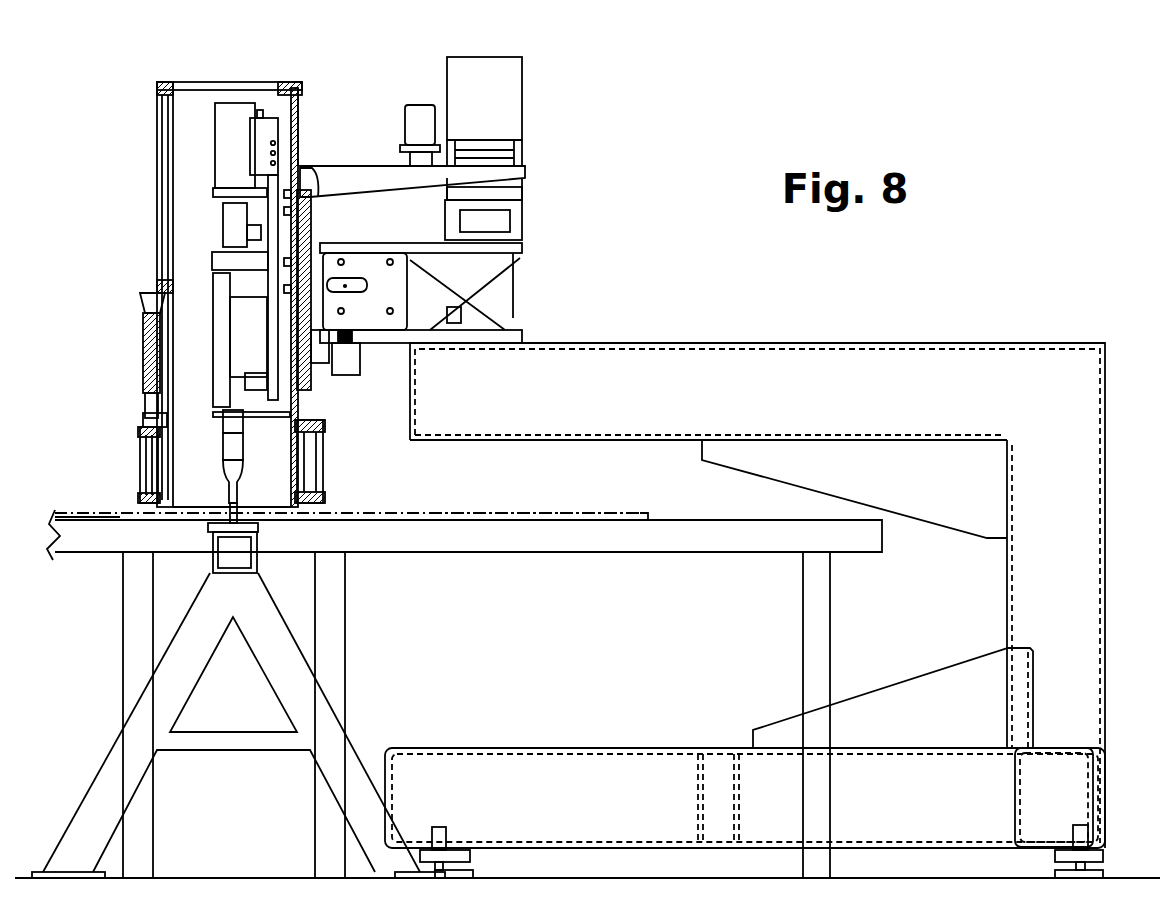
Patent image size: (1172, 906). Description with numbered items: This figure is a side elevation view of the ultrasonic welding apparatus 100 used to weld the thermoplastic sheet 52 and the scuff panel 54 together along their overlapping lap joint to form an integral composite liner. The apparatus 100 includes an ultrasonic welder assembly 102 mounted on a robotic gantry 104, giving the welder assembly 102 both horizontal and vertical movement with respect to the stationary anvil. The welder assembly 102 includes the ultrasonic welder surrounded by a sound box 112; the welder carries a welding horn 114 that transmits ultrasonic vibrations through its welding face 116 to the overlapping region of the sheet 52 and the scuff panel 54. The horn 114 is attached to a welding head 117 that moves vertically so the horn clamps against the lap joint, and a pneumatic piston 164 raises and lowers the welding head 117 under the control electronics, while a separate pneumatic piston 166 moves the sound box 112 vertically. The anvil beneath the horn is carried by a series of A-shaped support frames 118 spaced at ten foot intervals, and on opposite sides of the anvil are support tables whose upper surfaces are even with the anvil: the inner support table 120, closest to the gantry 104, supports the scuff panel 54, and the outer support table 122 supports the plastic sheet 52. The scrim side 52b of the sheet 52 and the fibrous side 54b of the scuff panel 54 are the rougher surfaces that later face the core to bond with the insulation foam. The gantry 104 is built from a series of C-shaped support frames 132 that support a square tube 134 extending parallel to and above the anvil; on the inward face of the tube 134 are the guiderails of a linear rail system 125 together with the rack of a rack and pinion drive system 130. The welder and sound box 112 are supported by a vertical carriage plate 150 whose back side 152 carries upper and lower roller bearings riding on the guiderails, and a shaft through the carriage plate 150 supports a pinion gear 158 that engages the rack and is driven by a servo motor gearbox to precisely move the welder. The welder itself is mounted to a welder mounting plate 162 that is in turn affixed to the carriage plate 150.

The ultrasonic welding apparatus 100 is at (552, 138).
The ultrasonic welder assembly 102 is at (259, 289).
The robotic gantry 104 is at (608, 262).
The sound box 112 is at (145, 443).
The welding horn 114 is at (242, 448).
The welding face 116 is at (233, 550).
The welding head 117 is at (215, 412).
The A-shaped support frame 118 is at (182, 683).
The inner support table 120 is at (413, 537).
The outer support table 122 is at (72, 533).
The linear rail system 125 is at (378, 330).
The rack and pinion drive system 130 is at (355, 230).
The C-shaped support frame 132 is at (745, 403).
The square tube 134 is at (350, 297).
The vertical carriage plate 150 is at (318, 195).
The back side of carriage plate 152 is at (312, 390).
The pinion gear 158 is at (320, 260).
The welder mounting plate 162 is at (294, 127).
The pneumatic piston 164 is at (227, 158).
The pneumatic piston 166 is at (143, 343).
The thermoplastic sheet 52 is at (82, 530).
The scrim side of thermoplastic sheet 52b is at (117, 510).
The scuff panel 54 is at (553, 512).
The fibrous side of scuff panel 54b is at (480, 512).